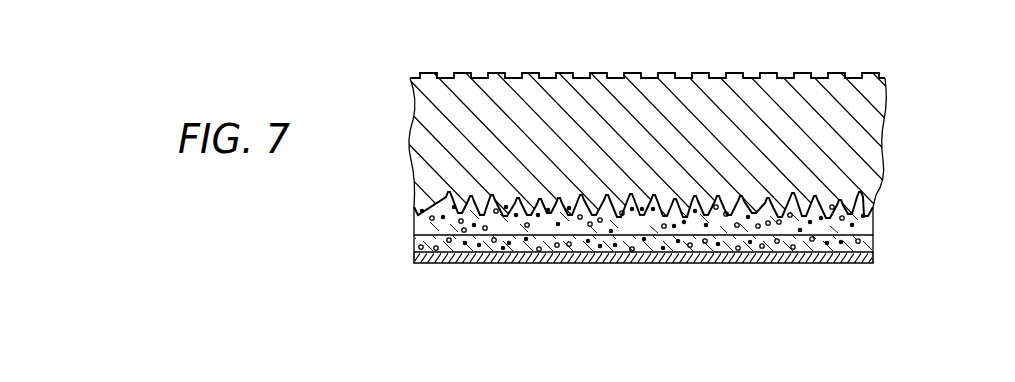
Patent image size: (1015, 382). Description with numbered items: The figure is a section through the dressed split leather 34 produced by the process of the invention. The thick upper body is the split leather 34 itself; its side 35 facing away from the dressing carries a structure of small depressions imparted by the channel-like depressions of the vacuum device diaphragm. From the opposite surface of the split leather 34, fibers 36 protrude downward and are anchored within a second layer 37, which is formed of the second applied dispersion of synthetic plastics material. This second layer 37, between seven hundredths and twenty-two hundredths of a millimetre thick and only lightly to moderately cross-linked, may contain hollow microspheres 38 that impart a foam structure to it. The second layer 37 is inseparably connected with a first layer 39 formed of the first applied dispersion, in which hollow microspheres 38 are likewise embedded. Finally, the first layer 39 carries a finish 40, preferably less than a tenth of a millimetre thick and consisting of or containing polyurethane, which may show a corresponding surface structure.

The dressed split leather 34 is at (868, 104).
The side facing off the dressing 35 is at (727, 71).
The fibers 36 is at (855, 185).
The second layer 37 is at (866, 218).
The hollow microspheres 38 is at (503, 250).
The first layer 39 is at (413, 244).
The finish 40 is at (755, 261).